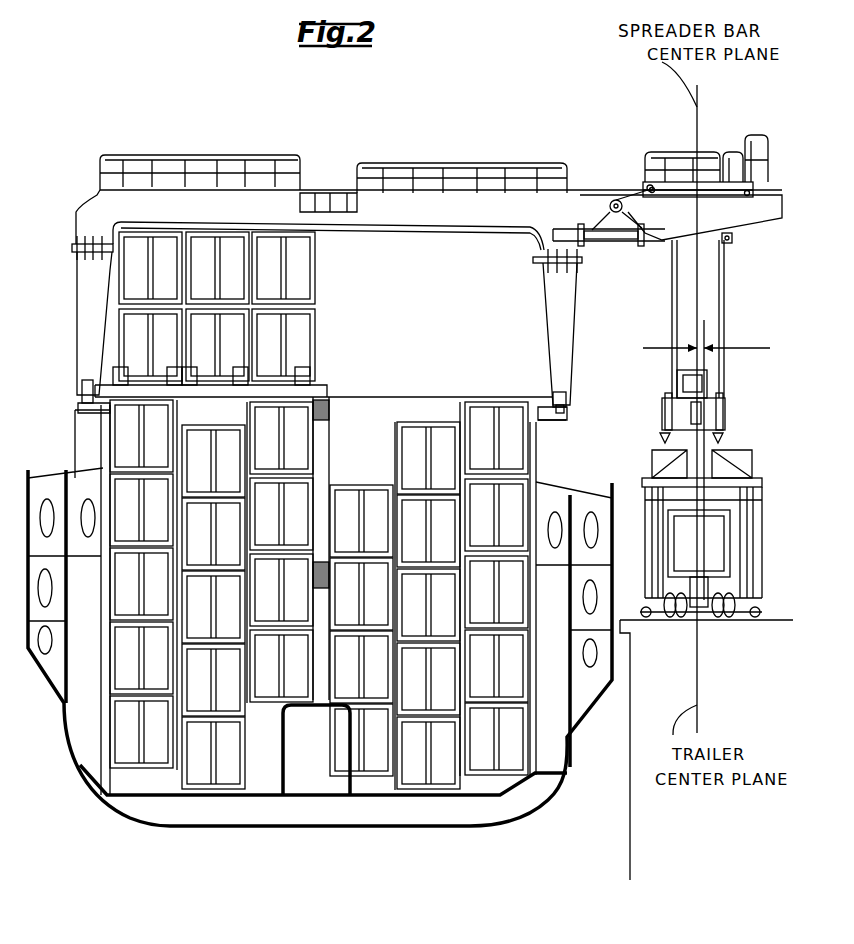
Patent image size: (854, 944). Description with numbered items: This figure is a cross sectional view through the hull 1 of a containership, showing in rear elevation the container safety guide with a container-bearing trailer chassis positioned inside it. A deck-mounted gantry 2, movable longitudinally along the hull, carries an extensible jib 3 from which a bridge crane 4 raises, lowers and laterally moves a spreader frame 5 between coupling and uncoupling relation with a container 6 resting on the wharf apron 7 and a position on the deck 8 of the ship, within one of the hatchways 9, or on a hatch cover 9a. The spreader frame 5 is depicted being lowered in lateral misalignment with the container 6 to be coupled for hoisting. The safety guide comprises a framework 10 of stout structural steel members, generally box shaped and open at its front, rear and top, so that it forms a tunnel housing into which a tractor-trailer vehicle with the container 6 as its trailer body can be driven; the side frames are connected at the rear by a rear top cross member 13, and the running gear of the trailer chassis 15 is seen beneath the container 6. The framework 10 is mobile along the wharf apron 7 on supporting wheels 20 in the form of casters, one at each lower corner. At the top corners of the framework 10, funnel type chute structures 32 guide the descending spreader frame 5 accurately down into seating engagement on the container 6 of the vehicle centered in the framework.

The hull 1 is at (90, 802).
The gantry 2 is at (455, 237).
The extensible jib 3 is at (762, 208).
The bridge crane 4 is at (659, 150).
The spreader frame 5 is at (723, 430).
The container 6 is at (316, 267).
The wharf apron 7 is at (771, 625).
The deck 8 is at (567, 420).
The hatchway 9 is at (363, 413).
The hatch cover 9a is at (320, 397).
The framework 10 is at (783, 534).
The rear top cross member 13 is at (757, 480).
The running gear of the trailer chassis 15 is at (678, 628).
The supporting wheels 20 is at (660, 624).
The funnel type chute structures 32 is at (660, 453).